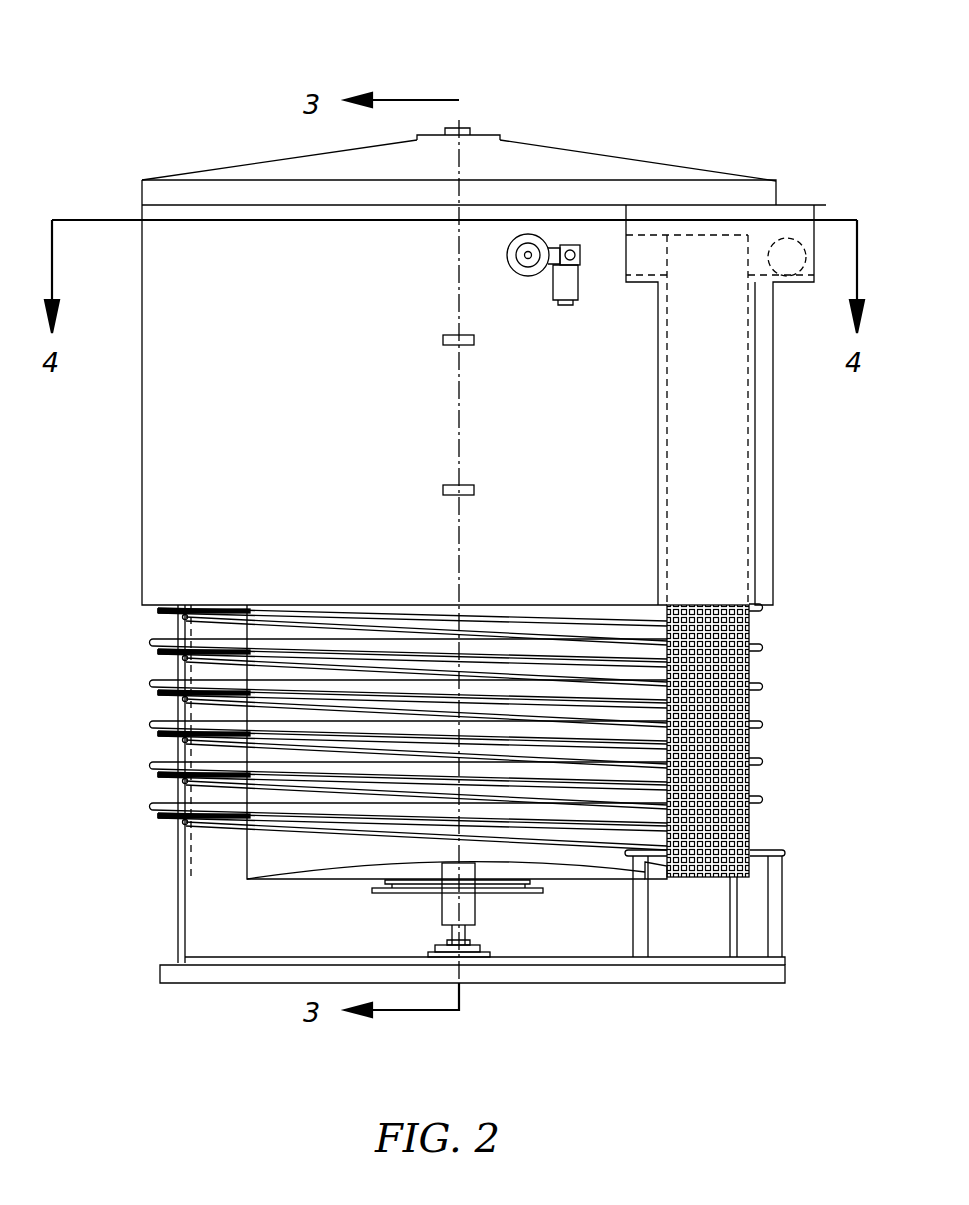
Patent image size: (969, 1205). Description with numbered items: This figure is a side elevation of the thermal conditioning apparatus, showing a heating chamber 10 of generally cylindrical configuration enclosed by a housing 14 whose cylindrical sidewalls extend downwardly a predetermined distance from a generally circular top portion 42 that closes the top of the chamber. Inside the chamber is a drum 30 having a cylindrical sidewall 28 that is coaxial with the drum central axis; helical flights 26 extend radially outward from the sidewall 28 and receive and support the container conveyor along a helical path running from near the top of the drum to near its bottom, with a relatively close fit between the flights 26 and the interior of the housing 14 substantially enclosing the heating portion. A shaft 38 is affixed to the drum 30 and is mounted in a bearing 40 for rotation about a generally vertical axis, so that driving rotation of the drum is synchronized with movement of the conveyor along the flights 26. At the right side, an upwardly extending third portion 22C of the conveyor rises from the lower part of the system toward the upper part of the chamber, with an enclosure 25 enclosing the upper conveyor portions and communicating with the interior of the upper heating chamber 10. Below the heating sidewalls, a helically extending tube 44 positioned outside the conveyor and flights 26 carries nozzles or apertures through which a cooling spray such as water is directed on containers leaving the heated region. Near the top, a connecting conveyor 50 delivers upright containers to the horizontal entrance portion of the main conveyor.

The heating chamber 10 is at (177, 127).
The housing 14 is at (195, 393).
The third portion of conveyor 22C is at (730, 702).
The enclosure 25 is at (727, 424).
The helical flights 26 is at (215, 615).
The cylindrical sidewall 28 is at (227, 637).
The drum 30 is at (307, 847).
The shaft 38 is at (440, 905).
The bearing 40 is at (470, 942).
The top portion 42 is at (528, 140).
The helically extending tube 44 is at (180, 678).
The connecting conveyor 50 is at (577, 235).